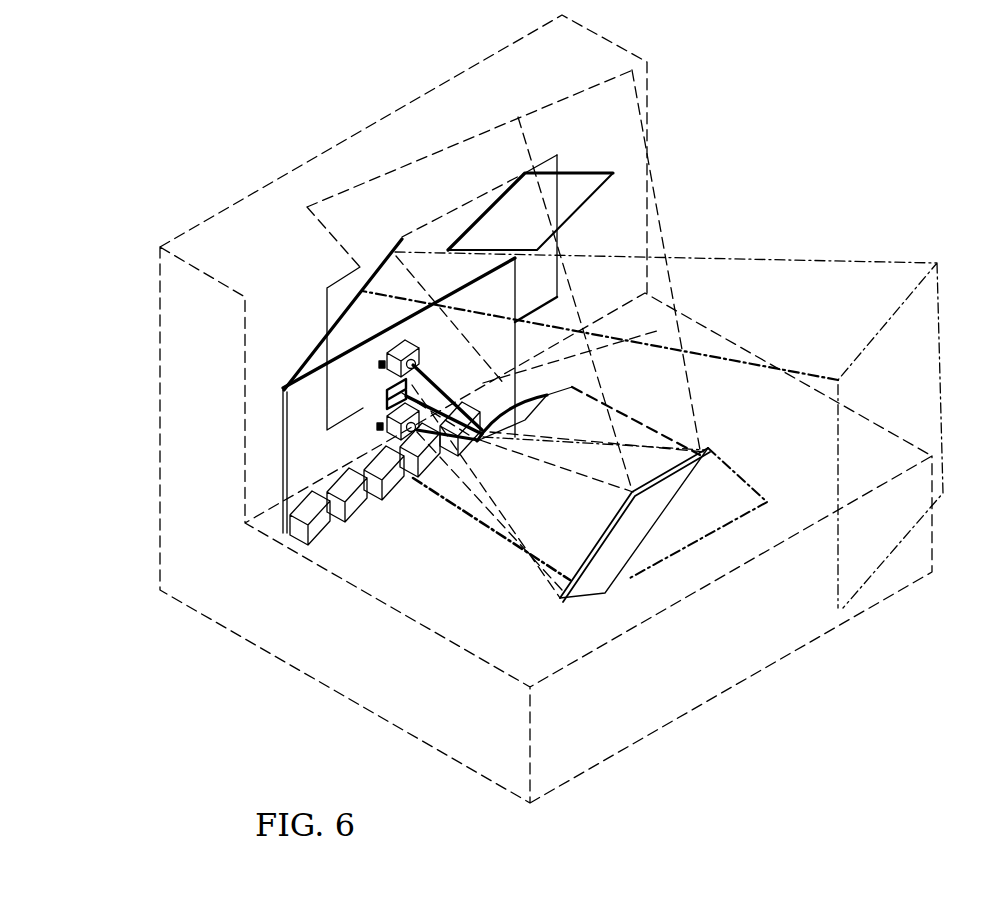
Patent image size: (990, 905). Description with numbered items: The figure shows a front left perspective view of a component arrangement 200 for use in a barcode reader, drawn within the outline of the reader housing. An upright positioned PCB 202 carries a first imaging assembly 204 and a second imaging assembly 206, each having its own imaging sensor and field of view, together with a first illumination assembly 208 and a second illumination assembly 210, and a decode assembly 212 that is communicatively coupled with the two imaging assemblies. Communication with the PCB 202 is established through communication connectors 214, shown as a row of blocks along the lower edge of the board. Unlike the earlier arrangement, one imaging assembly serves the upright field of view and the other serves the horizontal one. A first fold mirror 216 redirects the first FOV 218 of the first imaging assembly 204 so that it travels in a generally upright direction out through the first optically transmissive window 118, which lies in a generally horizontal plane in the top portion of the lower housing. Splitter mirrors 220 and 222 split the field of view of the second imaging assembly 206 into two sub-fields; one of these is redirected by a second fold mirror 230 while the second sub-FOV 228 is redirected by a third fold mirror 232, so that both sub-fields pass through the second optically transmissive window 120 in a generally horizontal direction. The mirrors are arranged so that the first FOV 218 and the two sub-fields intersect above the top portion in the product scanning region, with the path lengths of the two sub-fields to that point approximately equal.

The component arrangement 200 is at (247, 121).
The second optically transmissive window 120 is at (433, 223).
The second fold mirror 230 is at (595, 173).
The second sub-FOV 228 is at (428, 330).
The third fold mirror 232 is at (330, 312).
The PCB 202 is at (290, 482).
The second illumination assembly 210 is at (383, 365).
The second imaging assembly 206 is at (388, 380).
The decode assembly 212 is at (388, 397).
The first illumination assembly 208 is at (380, 427).
The first imaging assembly 204 is at (388, 437).
The communication connectors 214 is at (338, 537).
The splitter mirror 222 is at (487, 435).
The splitter mirror 220 is at (527, 393).
The first FOV 218 is at (510, 520).
The first optically transmissive window 118 is at (725, 473).
The first fold mirror 216 is at (617, 547).